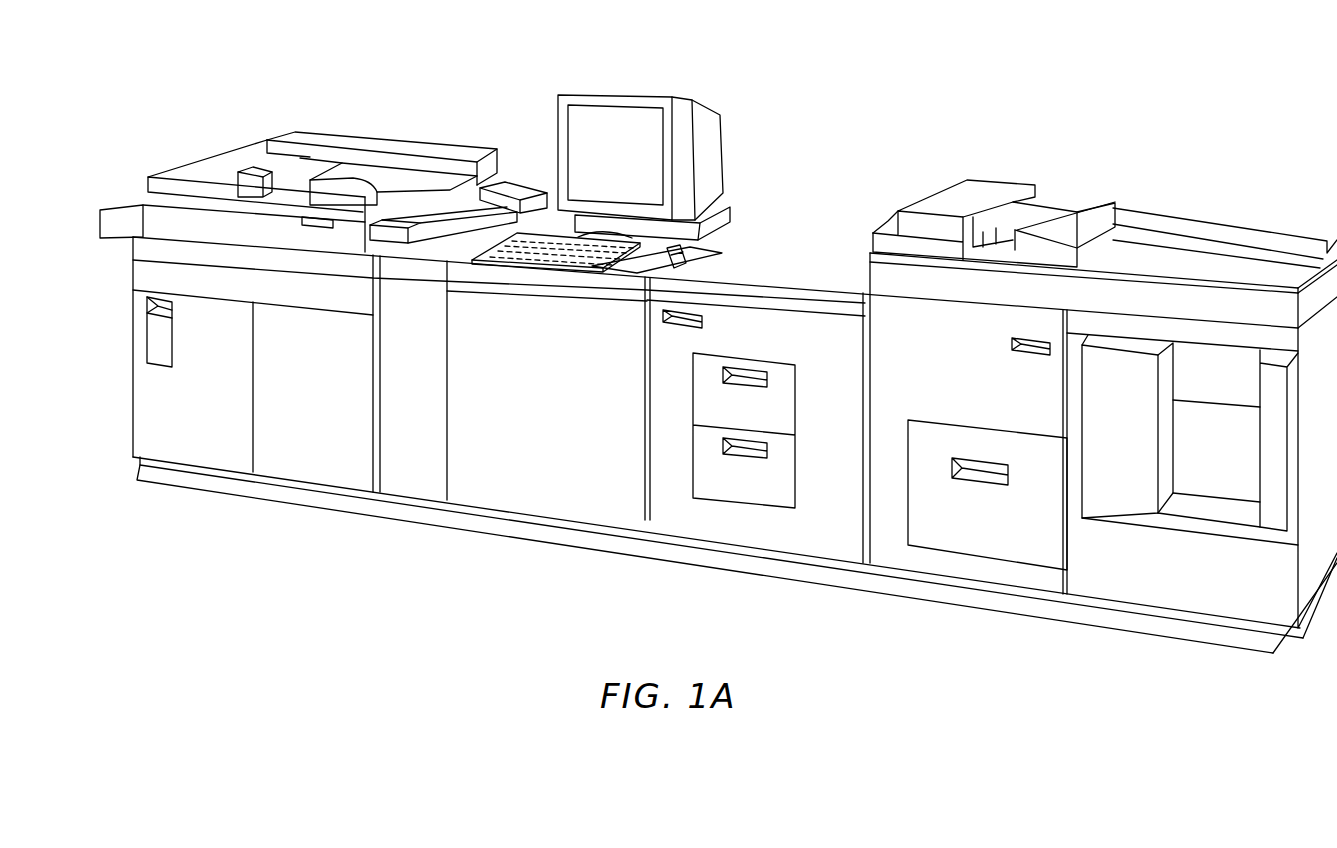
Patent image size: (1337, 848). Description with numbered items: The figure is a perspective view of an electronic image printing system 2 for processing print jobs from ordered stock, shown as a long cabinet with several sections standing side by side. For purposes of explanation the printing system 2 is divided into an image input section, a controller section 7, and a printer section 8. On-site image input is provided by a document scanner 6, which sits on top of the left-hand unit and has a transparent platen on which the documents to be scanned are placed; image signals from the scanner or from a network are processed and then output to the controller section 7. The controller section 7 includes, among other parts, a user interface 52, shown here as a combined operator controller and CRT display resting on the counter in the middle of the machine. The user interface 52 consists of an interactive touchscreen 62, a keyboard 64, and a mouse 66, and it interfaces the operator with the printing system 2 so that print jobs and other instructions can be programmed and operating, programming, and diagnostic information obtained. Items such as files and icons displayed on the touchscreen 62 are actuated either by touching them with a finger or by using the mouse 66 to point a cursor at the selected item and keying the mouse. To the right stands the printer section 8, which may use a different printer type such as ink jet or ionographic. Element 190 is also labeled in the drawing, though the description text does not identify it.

The image printing system 2 is at (848, 55).
The document scanner 6 is at (394, 104).
The controller section 7 is at (122, 380).
The printer section 8 is at (834, 174).
The user interface 52 is at (647, 73).
The interactive touchscreen 62 is at (593, 127).
The keyboard 64 is at (478, 280).
The mouse 66 is at (665, 273).
The controller 190 is at (541, 228).